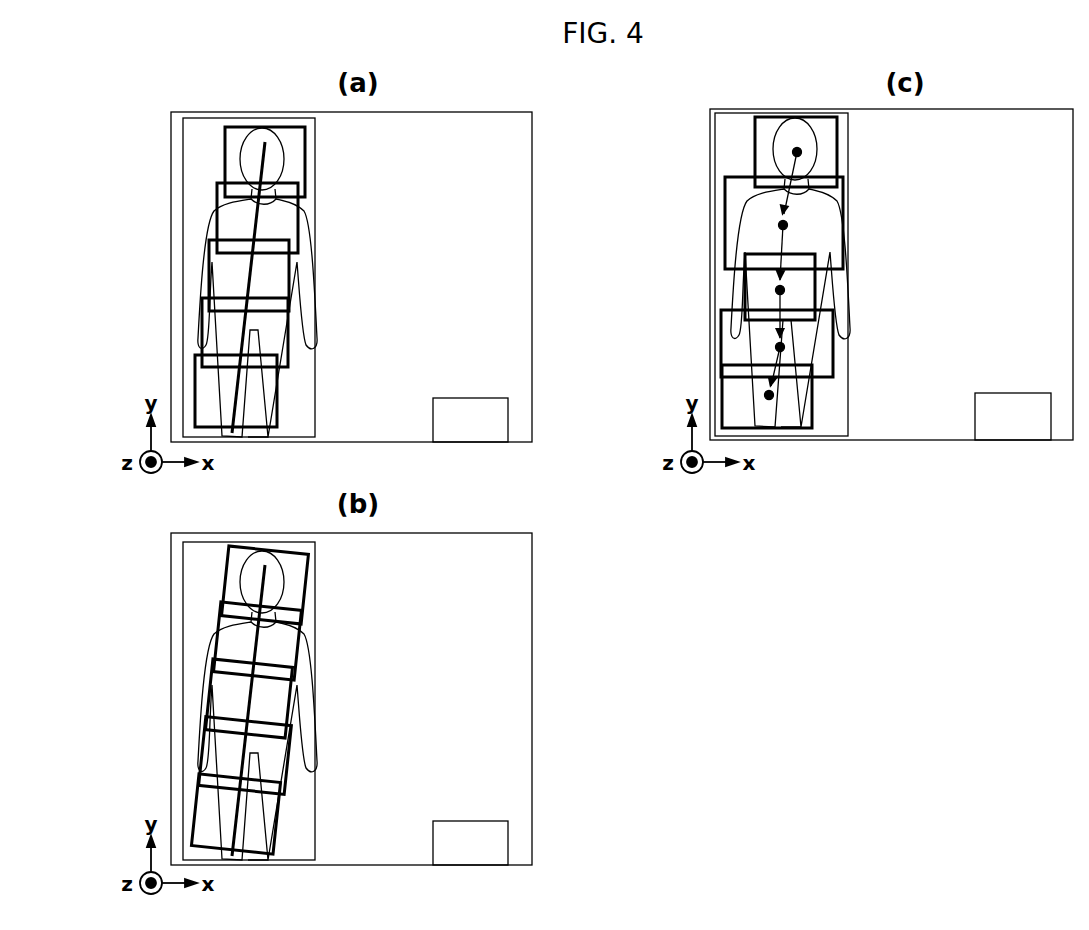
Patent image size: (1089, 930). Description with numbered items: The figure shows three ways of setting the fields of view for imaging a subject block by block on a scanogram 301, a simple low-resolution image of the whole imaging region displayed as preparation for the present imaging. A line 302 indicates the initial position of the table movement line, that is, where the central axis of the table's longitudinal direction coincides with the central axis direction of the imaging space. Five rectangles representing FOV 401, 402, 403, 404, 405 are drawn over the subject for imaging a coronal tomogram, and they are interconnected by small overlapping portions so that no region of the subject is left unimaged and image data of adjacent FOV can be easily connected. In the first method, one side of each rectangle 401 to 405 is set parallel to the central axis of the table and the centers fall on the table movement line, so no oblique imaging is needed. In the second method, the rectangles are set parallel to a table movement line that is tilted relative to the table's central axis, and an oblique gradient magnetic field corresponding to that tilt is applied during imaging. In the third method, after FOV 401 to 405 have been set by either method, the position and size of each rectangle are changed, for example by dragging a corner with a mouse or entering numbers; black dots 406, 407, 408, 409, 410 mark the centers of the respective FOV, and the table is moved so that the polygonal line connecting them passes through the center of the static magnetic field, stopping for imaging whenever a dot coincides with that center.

The scanogram 301 is at (198, 155).
The line indicating the initial position of the table movement line 302 is at (256, 212).
The rectangle representing FOV 401 is at (300, 152).
The rectangle representing FOV 402 is at (287, 213).
The rectangle representing FOV 403 is at (268, 273).
The rectangle representing FOV 404 is at (265, 333).
The rectangle representing FOV 405 is at (255, 395).
The black dot 406 is at (793, 151).
The black dot 407 is at (778, 223).
The black dot 408 is at (774, 288).
The black dot 409 is at (774, 345).
The black dot 410 is at (764, 393).